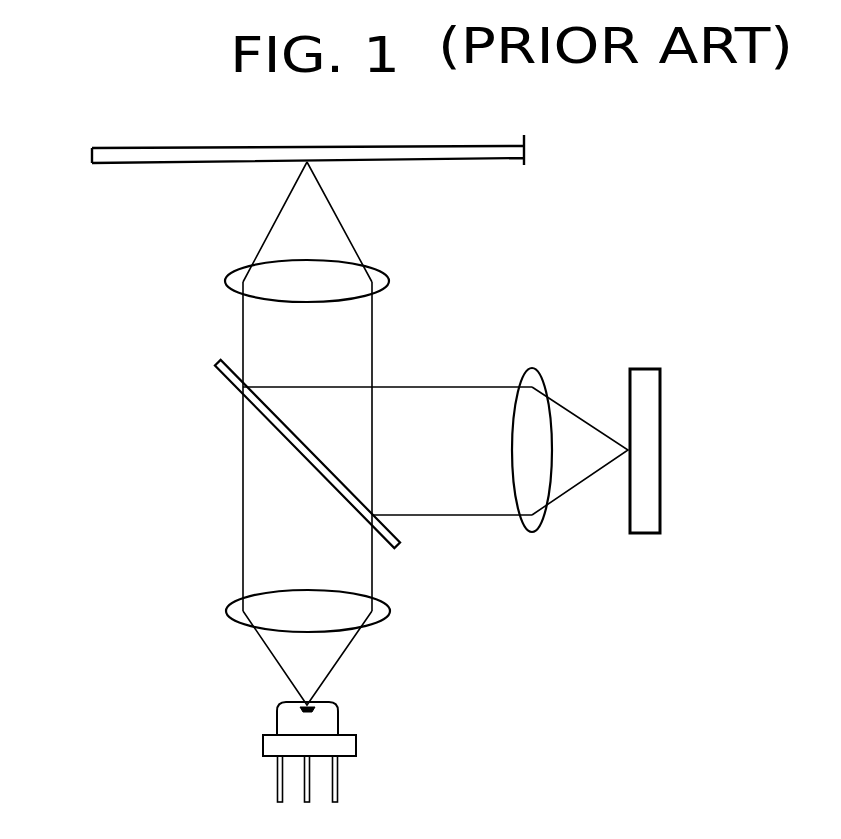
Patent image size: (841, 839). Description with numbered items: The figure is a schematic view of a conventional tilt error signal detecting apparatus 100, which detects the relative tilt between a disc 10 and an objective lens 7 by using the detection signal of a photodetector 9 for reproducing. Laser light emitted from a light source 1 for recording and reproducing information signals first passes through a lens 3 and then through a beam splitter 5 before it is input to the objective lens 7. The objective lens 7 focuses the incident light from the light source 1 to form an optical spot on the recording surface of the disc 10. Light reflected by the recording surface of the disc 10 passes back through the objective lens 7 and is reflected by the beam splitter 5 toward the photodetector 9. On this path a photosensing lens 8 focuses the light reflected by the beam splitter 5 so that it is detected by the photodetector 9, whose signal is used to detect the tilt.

The apparatus 100 is at (120, 715).
The light source 1 is at (338, 722).
The collimating lens 3 is at (385, 617).
The beam splitter 5 is at (223, 380).
The objective lens 7 is at (389, 281).
The photosensing lens 8 is at (532, 533).
The photodetector 9 is at (643, 535).
The disc 10 is at (455, 158).